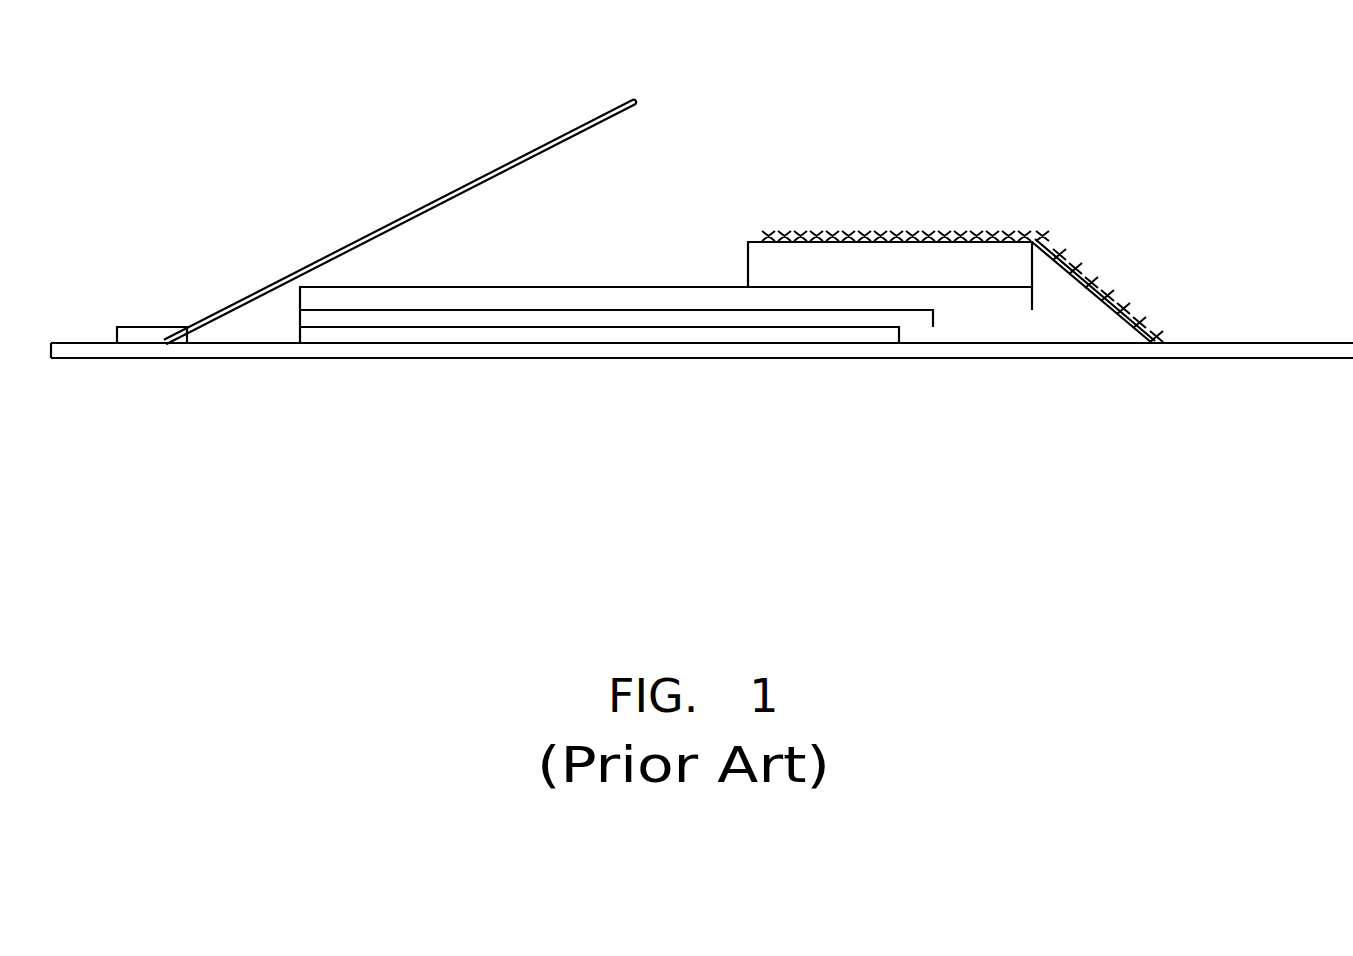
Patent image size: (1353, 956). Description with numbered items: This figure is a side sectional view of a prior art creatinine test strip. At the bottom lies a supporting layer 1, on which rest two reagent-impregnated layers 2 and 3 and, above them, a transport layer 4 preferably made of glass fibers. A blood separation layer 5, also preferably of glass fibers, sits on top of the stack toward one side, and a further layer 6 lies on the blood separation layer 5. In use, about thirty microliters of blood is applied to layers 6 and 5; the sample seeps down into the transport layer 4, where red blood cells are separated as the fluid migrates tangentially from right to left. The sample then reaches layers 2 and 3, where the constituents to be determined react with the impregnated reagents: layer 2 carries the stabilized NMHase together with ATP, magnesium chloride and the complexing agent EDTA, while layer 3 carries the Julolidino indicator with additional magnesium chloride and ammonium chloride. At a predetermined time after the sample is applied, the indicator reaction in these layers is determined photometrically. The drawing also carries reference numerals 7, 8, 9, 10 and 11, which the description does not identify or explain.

The supporting layer 1 is at (1257, 350).
The reagent layer 2 is at (725, 337).
The reagent layer 3 is at (547, 318).
The transport layer 4 is at (437, 302).
The blood separation layer 5 is at (762, 267).
The layer 6 is at (858, 232).
The lead wire 7 is at (1100, 322).
The bonding pad 8 is at (152, 335).
The lead wire 9 is at (485, 172).
The device portion 10 is at (748, 440).
The stacked layer portion 11 is at (718, 440).